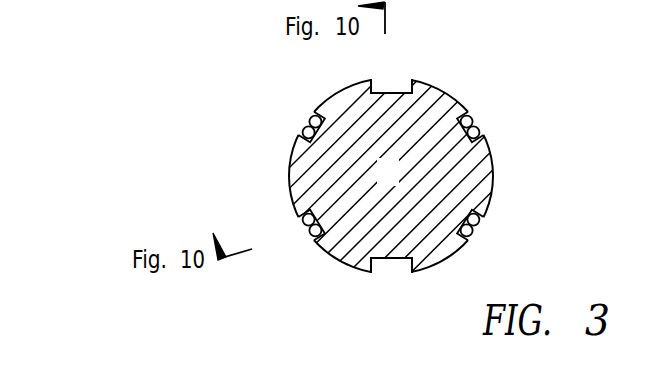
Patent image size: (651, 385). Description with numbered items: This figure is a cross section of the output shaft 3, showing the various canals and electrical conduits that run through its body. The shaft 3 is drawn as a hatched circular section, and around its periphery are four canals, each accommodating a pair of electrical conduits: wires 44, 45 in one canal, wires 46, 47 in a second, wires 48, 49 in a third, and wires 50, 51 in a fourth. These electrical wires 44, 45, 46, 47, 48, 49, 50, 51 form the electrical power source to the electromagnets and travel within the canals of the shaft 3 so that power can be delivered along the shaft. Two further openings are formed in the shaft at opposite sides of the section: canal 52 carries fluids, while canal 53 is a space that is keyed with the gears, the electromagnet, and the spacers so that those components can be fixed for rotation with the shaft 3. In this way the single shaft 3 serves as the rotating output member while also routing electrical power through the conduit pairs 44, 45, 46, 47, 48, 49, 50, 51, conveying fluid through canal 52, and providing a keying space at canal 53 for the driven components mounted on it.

The shaft 3 is at (477, 47).
The electrical wire 44 is at (305, 110).
The electrical wire 45 is at (297, 128).
The electrical wire 46 is at (287, 218).
The electrical wire 47 is at (307, 237).
The electrical wire 48 is at (475, 237).
The electrical wire 49 is at (487, 223).
The electrical wire 50 is at (490, 130).
The electrical wire 51 is at (477, 115).
The canal 52 is at (385, 80).
The canal 53 is at (383, 267).